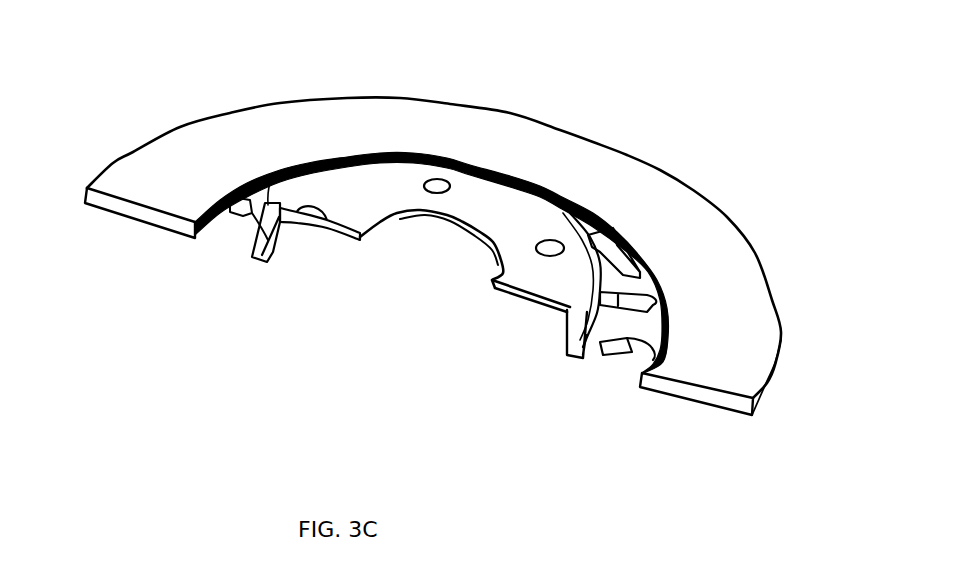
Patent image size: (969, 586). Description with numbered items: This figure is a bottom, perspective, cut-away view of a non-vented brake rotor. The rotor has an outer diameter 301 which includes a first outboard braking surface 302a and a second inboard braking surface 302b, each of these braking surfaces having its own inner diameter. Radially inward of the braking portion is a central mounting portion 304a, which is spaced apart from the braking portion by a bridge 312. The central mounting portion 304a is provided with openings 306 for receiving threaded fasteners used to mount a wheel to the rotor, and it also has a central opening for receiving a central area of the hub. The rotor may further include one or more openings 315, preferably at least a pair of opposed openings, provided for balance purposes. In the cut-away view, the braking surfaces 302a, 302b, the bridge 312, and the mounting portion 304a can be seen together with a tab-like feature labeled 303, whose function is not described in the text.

The outer diameter 301 is at (593, 142).
The first outboard braking surface 302a is at (165, 157).
The second inboard braking surface 302b is at (128, 217).
The locking tab 303 is at (650, 343).
The central mounting portion 304a is at (368, 204).
The openings 306 is at (437, 177).
The bridge 312 is at (627, 357).
The openings 315 is at (628, 321).